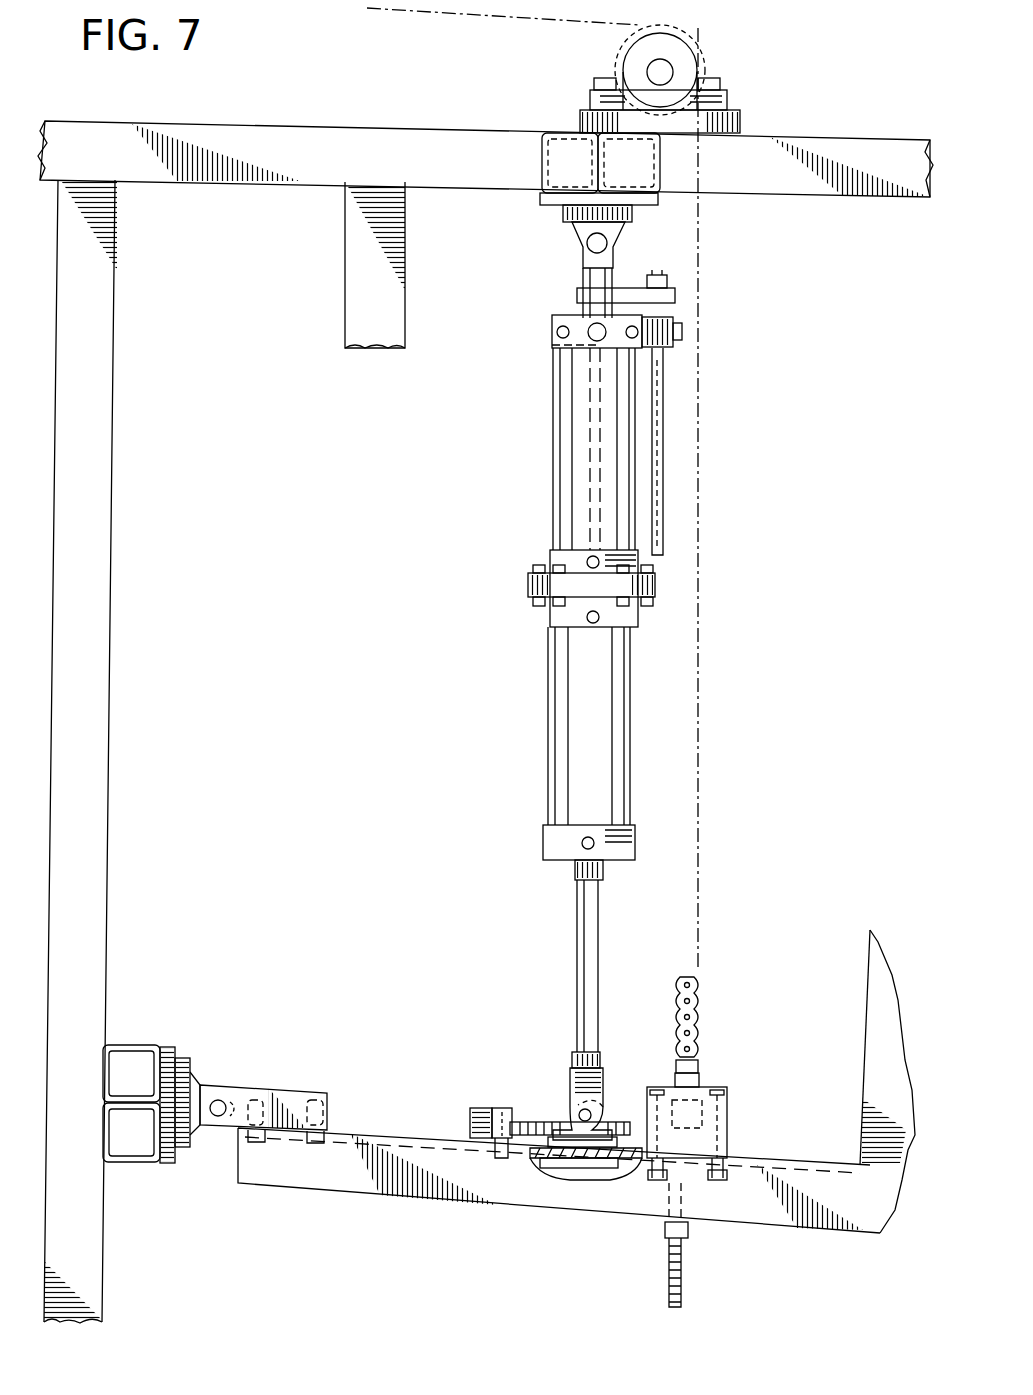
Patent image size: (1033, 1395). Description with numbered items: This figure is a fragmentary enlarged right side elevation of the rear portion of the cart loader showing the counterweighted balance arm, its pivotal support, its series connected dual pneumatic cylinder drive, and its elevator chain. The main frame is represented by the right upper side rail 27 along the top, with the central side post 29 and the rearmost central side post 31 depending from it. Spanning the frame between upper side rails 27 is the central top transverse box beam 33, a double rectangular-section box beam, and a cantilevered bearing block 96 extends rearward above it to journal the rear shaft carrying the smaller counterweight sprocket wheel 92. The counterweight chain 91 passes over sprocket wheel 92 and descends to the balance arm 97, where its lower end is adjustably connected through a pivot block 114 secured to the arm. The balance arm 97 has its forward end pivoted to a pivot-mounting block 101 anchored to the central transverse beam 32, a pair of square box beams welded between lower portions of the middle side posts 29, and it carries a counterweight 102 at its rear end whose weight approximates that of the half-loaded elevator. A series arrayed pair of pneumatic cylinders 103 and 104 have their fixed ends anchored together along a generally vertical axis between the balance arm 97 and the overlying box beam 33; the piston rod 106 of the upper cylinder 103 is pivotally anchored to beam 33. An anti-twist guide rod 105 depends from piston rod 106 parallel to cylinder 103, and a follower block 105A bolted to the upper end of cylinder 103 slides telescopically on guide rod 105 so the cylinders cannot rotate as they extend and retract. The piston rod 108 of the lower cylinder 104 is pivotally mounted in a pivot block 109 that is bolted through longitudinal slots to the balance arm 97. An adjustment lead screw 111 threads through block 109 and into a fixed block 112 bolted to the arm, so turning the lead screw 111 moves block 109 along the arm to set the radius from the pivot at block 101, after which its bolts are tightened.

The upper side rail 27 is at (298, 130).
The intermediate side post 29 is at (104, 512).
The intermediate side post 31 is at (392, 322).
The central transverse beam 32 is at (140, 1046).
The central top transverse box beam 33 is at (537, 160).
The counterweight chain 91 is at (487, 16).
The counterweight sprocket wheel 92 is at (694, 34).
The cantilevered bearing block 96 is at (742, 96).
The balance arm 97 is at (735, 1213).
The pivot-mounting block 101 is at (203, 1080).
The counterweight 102 is at (868, 1050).
The upper pneumatic cylinder 103 is at (553, 508).
The lower pneumatic cylinder 104 is at (553, 678).
The anti-twist guide rod 105 is at (666, 524).
The follower block 105A is at (682, 314).
The piston rod 106 is at (583, 282).
The piston rod 108 is at (596, 950).
The pivot block 109 is at (600, 1135).
The adjustment lead screw 111 is at (532, 1118).
The fixed block 112 is at (497, 1136).
The pivot block 114 is at (708, 1135).